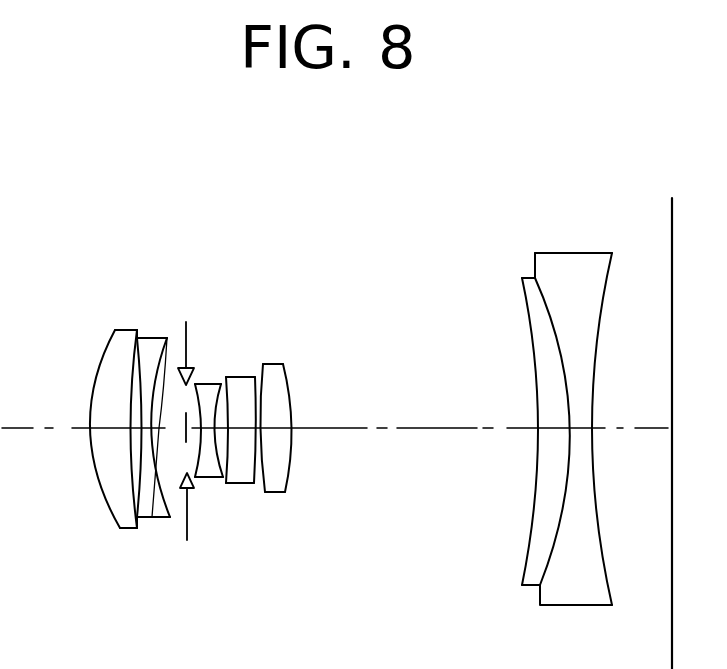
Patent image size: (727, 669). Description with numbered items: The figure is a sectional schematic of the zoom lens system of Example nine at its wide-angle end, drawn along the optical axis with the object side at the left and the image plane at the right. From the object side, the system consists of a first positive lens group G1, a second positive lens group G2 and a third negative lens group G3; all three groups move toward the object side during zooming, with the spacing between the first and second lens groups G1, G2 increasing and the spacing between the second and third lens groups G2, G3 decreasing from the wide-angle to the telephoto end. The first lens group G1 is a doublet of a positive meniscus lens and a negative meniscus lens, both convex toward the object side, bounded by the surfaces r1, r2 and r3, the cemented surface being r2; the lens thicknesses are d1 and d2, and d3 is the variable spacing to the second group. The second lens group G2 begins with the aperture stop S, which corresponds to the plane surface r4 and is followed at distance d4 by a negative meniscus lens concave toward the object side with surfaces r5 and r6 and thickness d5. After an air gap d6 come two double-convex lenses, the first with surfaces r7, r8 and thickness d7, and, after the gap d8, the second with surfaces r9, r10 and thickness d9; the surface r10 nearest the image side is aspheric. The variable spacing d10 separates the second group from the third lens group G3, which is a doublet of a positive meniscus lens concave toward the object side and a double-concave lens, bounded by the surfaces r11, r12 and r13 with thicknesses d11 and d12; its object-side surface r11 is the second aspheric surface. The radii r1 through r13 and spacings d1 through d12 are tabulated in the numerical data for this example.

The first positive lens group G1 is at (160, 212).
The second positive lens group G2 is at (288, 212).
The third negative lens group G3 is at (620, 212).
The aperture stop S is at (186, 408).
The radius of curvature of first lens surface r1 is at (104, 353).
The radius of curvature of second lens surface r2 is at (121, 332).
The radius of curvature of third lens surface r3 is at (147, 337).
The radius of curvature of fourth lens surface r4 is at (170, 345).
The radius of curvature of fifth lens surface r5 is at (201, 384).
The radius of curvature of sixth lens surface r6 is at (216, 384).
The radius of curvature of seventh lens surface r7 is at (230, 377).
The radius of curvature of eighth lens surface r8 is at (250, 377).
The radius of curvature of ninth lens surface r9 is at (265, 364).
The radius of curvature of tenth lens surface r10 is at (291, 402).
The radius of curvature of eleventh lens surface r11 is at (525, 315).
The radius of curvature of twelfth lens surface r12 is at (545, 302).
The radius of curvature of thirteenth lens surface r13 is at (607, 285).
The spacing between first and second lens surfaces d1 is at (117, 429).
The spacing between second and third lens surfaces d2 is at (141, 527).
The spacing between third and fourth lens surfaces d3 is at (152, 517).
The spacing between fourth and fifth lens surfaces d4 is at (201, 478).
The spacing between fifth and sixth lens surfaces d5 is at (215, 478).
The spacing between sixth and seventh lens surfaces d6 is at (234, 487).
The spacing between seventh and eighth lens surfaces d7 is at (253, 485).
The spacing between eighth and ninth lens surfaces d8 is at (270, 492).
The spacing between ninth and tenth lens surfaces d9 is at (287, 432).
The spacing between tenth and eleventh lens surfaces d10 is at (406, 452).
The spacing between eleventh and twelfth lens surfaces d11 is at (553, 434).
The spacing between twelfth and thirteenth lens surfaces d12 is at (577, 438).